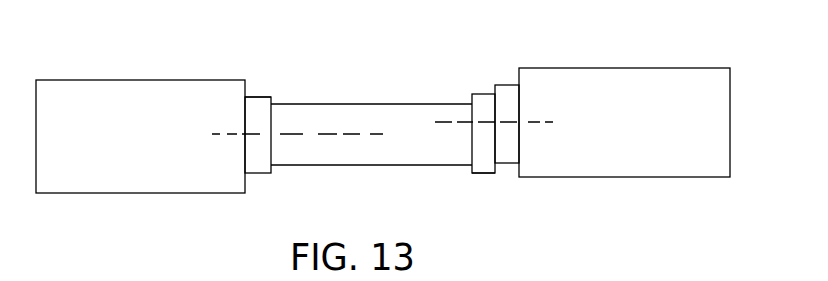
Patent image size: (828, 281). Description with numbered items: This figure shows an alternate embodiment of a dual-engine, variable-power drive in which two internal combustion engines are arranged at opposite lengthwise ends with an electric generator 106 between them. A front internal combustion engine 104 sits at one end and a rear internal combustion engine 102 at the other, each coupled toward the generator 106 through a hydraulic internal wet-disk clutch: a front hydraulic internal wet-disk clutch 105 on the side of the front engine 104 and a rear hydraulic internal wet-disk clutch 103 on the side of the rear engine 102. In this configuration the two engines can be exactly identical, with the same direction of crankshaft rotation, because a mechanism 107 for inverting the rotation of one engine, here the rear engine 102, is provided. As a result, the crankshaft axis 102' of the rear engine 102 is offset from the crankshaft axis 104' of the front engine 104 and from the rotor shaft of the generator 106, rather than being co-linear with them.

The rear internal combustion engine 102 is at (624, 122).
The crankshaft axis 102' is at (488, 87).
The rear hydraulic internal wet-disk clutch 103 is at (495, 84).
The front internal combustion engine 104 is at (140, 136).
The crankshaft axis 104' is at (262, 96).
The front hydraulic internal wet-disk clutch 105 is at (332, 87).
The electric generator 106 is at (443, 162).
The mechanism for inverting rotation 107 is at (490, 173).